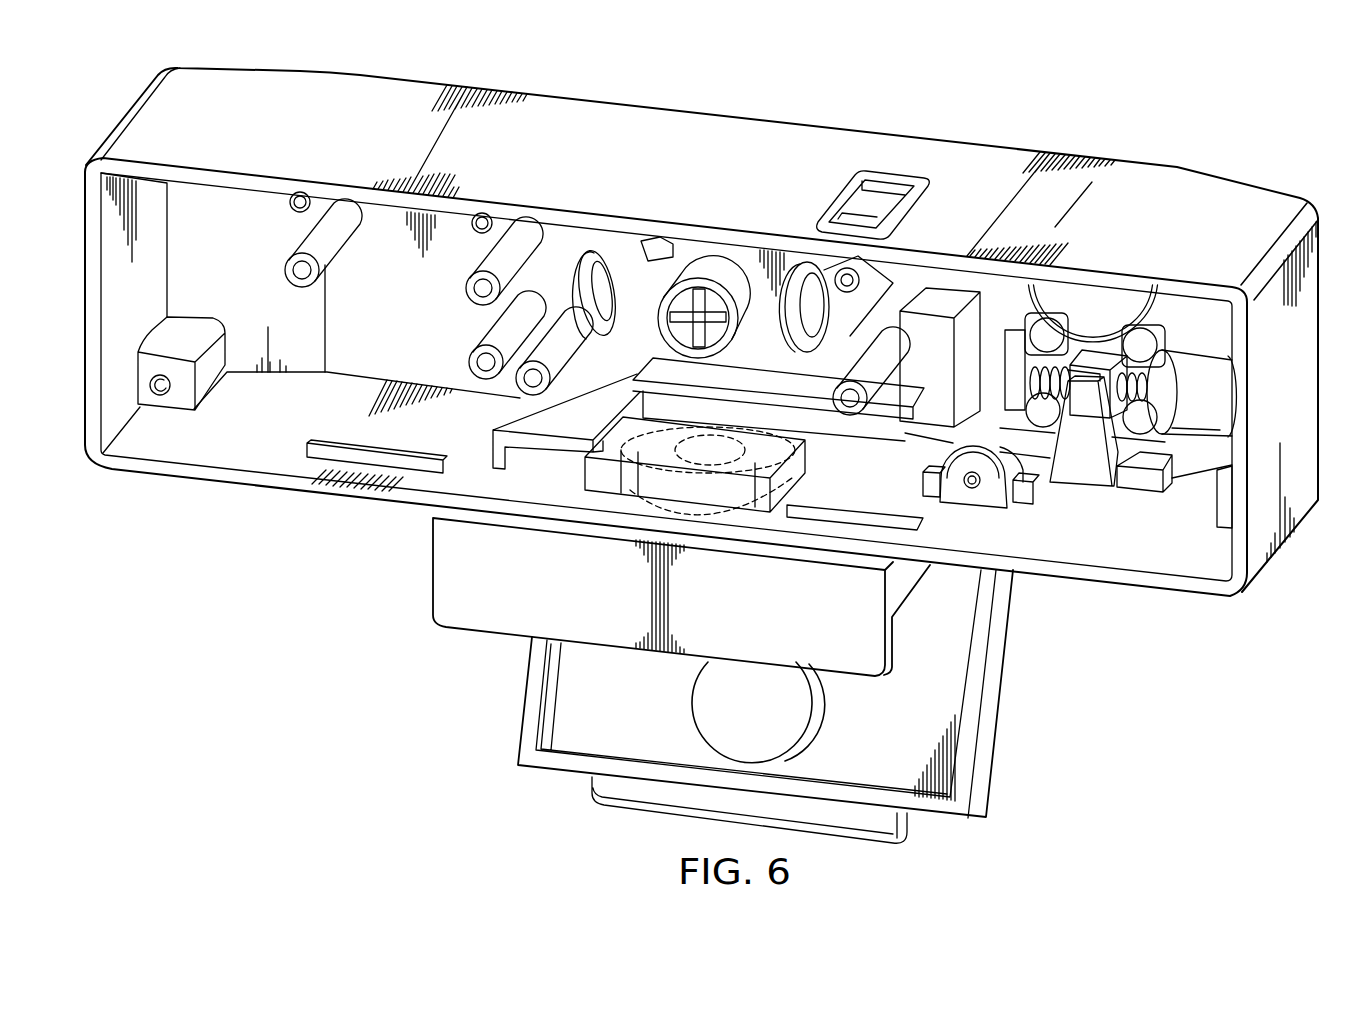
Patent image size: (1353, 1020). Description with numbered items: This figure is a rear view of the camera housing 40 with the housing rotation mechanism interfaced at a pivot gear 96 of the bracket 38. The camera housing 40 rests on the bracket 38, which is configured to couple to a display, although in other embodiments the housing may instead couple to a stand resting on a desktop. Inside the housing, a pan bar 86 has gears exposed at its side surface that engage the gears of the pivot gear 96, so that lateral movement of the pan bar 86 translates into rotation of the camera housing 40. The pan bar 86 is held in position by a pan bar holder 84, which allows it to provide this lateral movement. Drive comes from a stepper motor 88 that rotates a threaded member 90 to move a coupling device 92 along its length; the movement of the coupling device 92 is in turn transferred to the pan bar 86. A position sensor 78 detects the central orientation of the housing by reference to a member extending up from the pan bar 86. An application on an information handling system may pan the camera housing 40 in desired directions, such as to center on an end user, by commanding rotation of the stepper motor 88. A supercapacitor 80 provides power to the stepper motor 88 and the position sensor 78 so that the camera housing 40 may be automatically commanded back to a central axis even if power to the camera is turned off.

The camera housing 40 is at (697, 130).
The bracket 38 is at (988, 694).
The position sensor 78 is at (937, 293).
The supercapacitor 80 is at (1115, 302).
The pan bar holder 84 is at (1007, 503).
The pan bar 86 is at (1103, 493).
The stepper motor 88 is at (1193, 360).
The threaded member 90 is at (1143, 387).
The coupling device 92 is at (1088, 360).
The pivot gear 96 is at (733, 513).